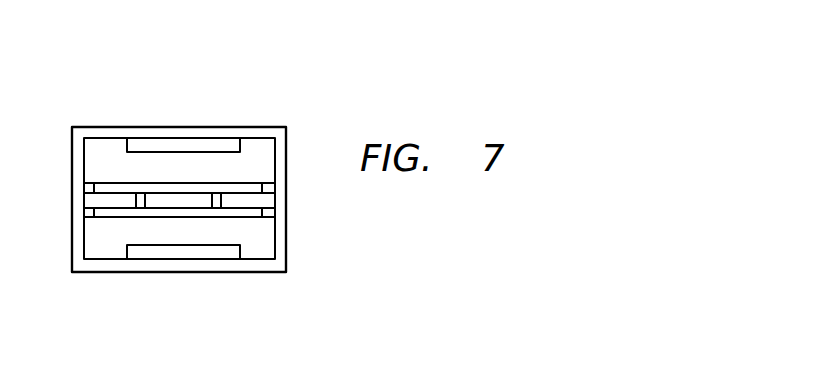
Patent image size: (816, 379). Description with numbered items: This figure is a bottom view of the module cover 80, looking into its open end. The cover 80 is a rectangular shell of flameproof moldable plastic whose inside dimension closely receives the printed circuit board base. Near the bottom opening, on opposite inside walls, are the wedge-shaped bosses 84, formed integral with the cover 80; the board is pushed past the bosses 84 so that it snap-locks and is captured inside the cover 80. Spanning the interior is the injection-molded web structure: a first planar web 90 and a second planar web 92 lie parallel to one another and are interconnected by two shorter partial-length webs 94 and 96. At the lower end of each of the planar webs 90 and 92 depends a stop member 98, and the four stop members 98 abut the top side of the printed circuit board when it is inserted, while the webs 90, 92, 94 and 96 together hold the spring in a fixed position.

The cover 80 is at (267, 126).
The boss 84 is at (133, 141).
The first planar web 90 is at (251, 217).
The second planar web 92 is at (100, 183).
The partial-length web 94 is at (150, 201).
The partial-length web 96 is at (212, 203).
The stop member 98 is at (100, 217).